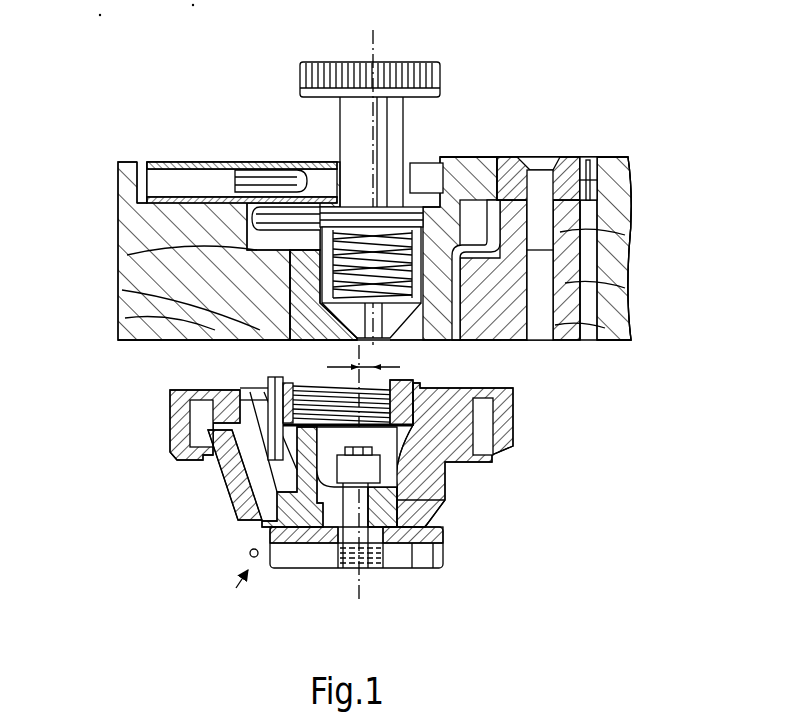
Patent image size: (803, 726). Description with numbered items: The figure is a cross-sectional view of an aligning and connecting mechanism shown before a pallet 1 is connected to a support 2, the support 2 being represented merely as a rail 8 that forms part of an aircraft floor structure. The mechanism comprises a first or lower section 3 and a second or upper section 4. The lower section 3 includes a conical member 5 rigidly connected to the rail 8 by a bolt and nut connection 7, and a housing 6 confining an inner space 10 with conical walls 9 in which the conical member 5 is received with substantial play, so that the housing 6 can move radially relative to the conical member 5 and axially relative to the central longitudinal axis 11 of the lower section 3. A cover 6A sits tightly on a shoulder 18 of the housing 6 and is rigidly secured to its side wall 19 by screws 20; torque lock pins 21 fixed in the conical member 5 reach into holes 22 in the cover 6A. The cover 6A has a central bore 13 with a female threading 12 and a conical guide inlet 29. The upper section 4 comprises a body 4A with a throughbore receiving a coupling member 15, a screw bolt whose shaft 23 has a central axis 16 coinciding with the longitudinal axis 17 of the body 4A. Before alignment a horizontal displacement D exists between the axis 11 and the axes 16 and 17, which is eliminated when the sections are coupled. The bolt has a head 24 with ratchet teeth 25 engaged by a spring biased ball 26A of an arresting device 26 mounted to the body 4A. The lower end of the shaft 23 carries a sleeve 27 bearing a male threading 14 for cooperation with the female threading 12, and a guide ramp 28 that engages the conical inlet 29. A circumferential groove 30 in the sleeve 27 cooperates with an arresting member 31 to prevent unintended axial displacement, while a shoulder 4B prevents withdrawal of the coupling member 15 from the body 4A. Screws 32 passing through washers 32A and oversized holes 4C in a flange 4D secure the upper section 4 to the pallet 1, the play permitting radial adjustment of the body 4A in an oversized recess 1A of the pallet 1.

The pallet 1 is at (631, 235).
The oversized recess 1A is at (140, 163).
The support 2 is at (236, 588).
The first or lower section 3 is at (562, 496).
The second or upper section 4 is at (548, 108).
The body 4A is at (487, 155).
The shoulder 4B is at (426, 178).
The oversized holes 4C is at (597, 160).
The flange 4D is at (600, 178).
The conical member 5 is at (430, 455).
The housing 6 is at (512, 430).
The cover 6A is at (166, 409).
The bolt and nut connection 7 is at (345, 545).
The rail 8 is at (410, 560).
The conical walls 9 is at (245, 465).
The inner space 10 is at (262, 492).
The central longitudinal axis of the first section 11 is at (365, 567).
The female threading 12 is at (450, 545).
The central bore 13 is at (490, 378).
The male threading 14 is at (345, 341).
The coupling member 15 is at (397, 125).
The central axis of the shaft 16 is at (385, 42).
The central longitudinal axis of the body 17 is at (372, 147).
The shoulder of the housing 18 is at (195, 425).
The side wall of the housing 19 is at (432, 500).
The screws 20 is at (492, 453).
The pins 21 is at (235, 430).
The holes 22 is at (262, 440).
The shaft 23 is at (416, 157).
The head 24 is at (297, 71).
The ratchet teeth 25 is at (346, 72).
The arresting device 26 is at (238, 163).
The spring biased ball 26A is at (292, 178).
The sleeve 27 is at (350, 353).
The guide ramp 28 is at (470, 348).
The conical guide inlet 29 is at (250, 557).
The circumferential groove 30 is at (330, 210).
The arresting member 31 is at (177, 225).
The screws 32 is at (545, 160).
The washers 32A is at (575, 163).
The displacement D is at (363, 355).